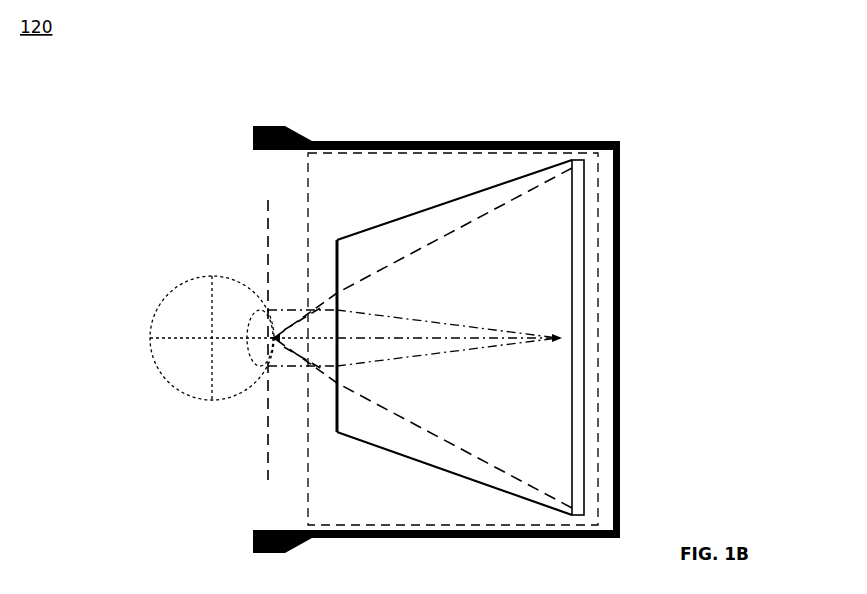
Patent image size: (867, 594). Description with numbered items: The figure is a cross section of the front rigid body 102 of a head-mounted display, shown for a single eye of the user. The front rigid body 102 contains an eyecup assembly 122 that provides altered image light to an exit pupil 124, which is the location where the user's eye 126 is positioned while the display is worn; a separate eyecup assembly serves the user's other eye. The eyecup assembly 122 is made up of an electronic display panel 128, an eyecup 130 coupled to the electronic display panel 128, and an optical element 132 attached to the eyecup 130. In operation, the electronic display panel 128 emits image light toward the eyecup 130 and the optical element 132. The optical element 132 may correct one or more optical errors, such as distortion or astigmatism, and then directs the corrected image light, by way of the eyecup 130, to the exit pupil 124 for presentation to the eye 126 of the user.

The front rigid body 102 is at (592, 138).
The eyecup assembly 122 is at (305, 444).
The exit pupil 124 is at (264, 462).
The eye 126 is at (182, 284).
The electronic display panel 128 is at (586, 265).
The eyecup 130 is at (468, 190).
The optical element 132 is at (333, 247).